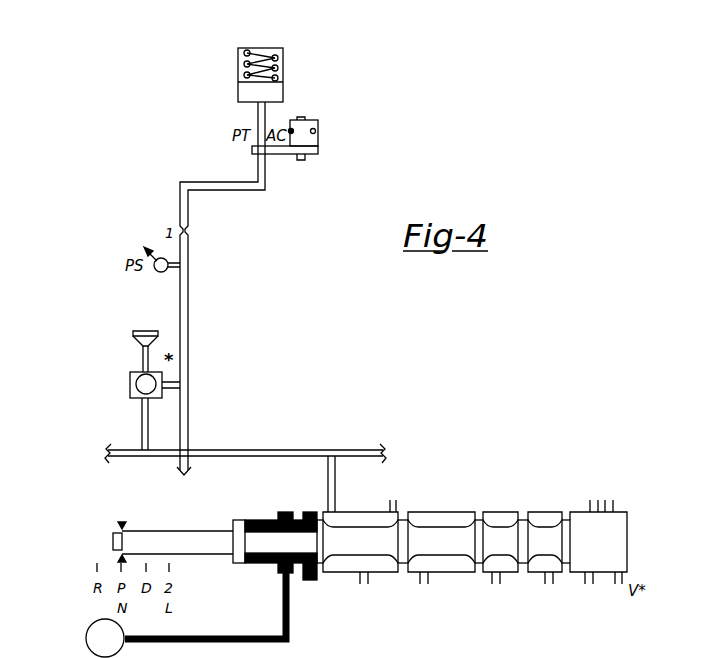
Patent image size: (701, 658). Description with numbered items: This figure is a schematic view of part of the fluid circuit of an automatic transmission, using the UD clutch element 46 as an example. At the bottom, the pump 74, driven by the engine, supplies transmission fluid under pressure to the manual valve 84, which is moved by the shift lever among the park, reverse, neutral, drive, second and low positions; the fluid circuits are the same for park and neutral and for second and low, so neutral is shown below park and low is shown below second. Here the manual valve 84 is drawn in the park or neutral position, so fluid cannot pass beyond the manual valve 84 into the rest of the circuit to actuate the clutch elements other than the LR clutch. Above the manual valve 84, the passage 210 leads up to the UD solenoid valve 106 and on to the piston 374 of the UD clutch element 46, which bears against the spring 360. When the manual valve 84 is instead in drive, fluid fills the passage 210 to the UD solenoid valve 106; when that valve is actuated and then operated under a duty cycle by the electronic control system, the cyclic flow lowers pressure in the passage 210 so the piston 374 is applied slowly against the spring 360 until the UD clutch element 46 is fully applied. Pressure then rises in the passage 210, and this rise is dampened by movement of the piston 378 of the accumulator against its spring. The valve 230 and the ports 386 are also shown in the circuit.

The spring 360 is at (265, 55).
The UD clutch element 46 is at (238, 73).
The piston 374 is at (238, 90).
The port 386 is at (290, 130).
The shift valve 230 is at (300, 118).
The piston 378 is at (318, 149).
The passage 210 is at (188, 346).
The UD solenoid valve 106 is at (146, 370).
The manual valve 84 is at (148, 540).
The pump 74 is at (86, 636).